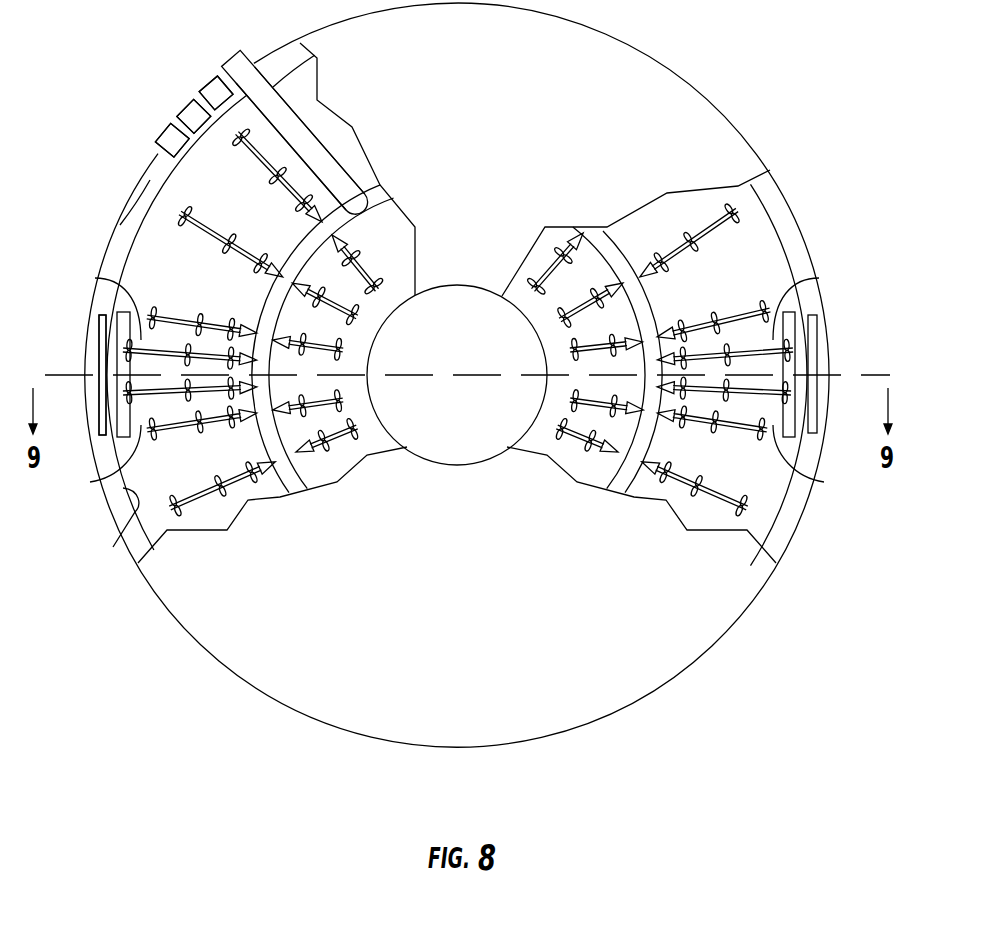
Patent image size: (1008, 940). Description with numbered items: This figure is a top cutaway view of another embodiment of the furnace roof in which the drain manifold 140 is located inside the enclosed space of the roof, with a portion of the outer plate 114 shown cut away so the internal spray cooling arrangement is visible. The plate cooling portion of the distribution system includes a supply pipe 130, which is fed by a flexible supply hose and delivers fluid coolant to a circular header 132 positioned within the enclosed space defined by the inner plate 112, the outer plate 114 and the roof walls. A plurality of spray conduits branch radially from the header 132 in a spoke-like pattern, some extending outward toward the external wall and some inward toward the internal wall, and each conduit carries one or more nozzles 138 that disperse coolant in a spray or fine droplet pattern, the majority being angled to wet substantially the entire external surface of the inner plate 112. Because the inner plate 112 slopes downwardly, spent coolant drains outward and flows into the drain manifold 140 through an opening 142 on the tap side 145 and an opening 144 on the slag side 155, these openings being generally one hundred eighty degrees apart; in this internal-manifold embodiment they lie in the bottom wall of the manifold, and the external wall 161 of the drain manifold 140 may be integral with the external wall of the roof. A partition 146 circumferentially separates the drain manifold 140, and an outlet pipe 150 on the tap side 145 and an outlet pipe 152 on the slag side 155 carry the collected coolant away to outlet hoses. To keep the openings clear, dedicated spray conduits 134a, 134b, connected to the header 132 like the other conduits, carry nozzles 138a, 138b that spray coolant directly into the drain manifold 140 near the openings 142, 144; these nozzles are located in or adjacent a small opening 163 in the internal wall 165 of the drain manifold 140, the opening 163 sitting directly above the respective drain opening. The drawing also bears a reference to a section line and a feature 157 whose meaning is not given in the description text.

The outer plate 114 is at (308, 672).
The external wall of the drain manifold 161 is at (137, 190).
The drain manifold 140 is at (127, 230).
The header 132 is at (284, 480).
The supply pipe 130 is at (246, 62).
The slot wall 157 is at (250, 93).
The slag side 155 is at (207, 125).
The inner plate 112 is at (190, 172).
The outlet pipe 152 is at (208, 80).
The partition 146 is at (190, 108).
The outlet pipe 150 is at (168, 127).
The tap side 145 is at (38, 304).
The opening 142 is at (100, 322).
The opening 163 is at (100, 432).
The opening 144 is at (814, 432).
The spray conduit 134a is at (96, 278).
The spray conduit 134b is at (819, 280).
The internal wall of the drain manifold 165 is at (127, 530).
The nozzle 138 is at (795, 225).
The nozzle 138a is at (121, 350).
The nozzle 138b is at (795, 350).